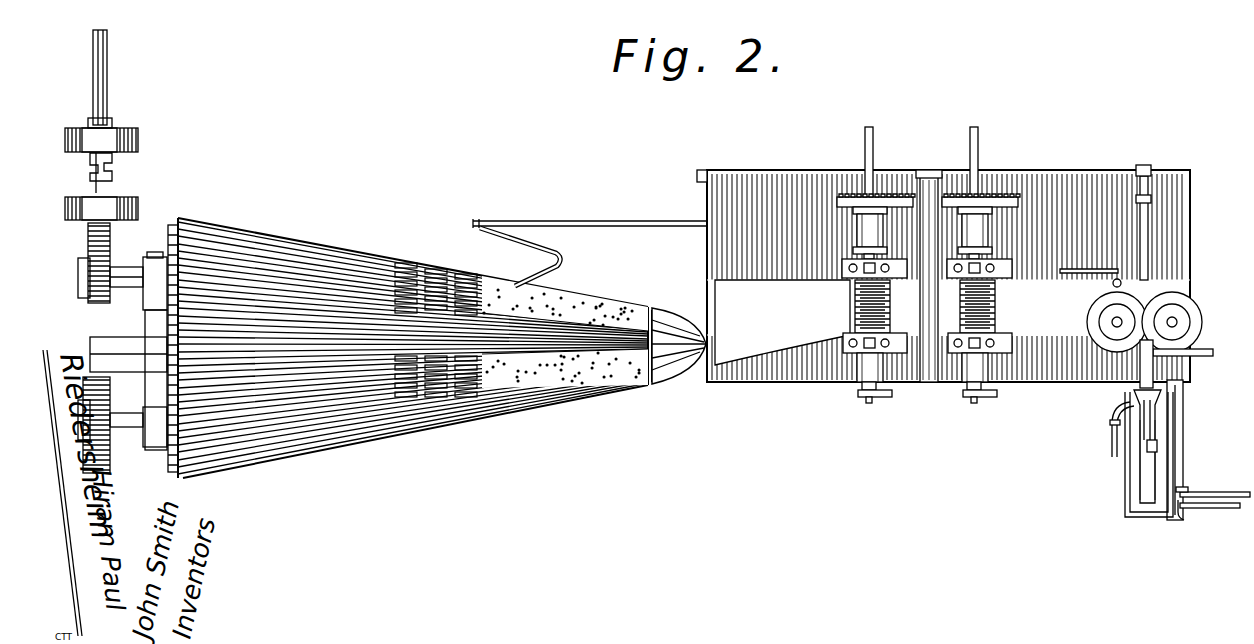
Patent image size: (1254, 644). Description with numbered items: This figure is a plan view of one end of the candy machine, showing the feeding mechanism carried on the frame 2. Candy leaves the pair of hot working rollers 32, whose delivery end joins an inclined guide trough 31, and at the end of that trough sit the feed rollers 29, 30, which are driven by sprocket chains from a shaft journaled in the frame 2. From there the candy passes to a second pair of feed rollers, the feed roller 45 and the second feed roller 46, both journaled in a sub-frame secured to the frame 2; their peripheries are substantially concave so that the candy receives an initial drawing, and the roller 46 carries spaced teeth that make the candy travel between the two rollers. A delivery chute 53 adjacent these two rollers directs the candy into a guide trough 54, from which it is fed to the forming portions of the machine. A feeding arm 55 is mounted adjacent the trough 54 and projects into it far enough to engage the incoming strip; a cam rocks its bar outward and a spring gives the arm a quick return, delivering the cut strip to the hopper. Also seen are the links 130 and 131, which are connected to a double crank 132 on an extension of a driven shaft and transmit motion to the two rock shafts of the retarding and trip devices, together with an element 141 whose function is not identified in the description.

The frame 2 is at (943, 261).
The feed roller 29 is at (888, 319).
The feed roller 30 is at (996, 319).
The guide trough 31 is at (782, 322).
The working rollers 32 is at (489, 285).
The feed roller 45 is at (1188, 306).
The second feed roller 46 is at (1088, 313).
The delivery chute 53 is at (1138, 385).
The guide trough 54 is at (1150, 480).
The feeding arm 55 is at (1157, 447).
The link 130 is at (1210, 493).
The link 131 is at (1232, 506).
The double crank 132 is at (1187, 510).
The rod 141 is at (1183, 415).